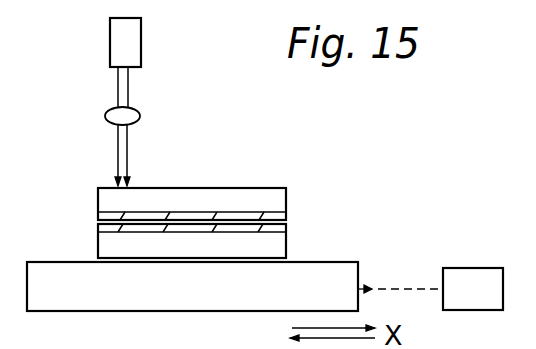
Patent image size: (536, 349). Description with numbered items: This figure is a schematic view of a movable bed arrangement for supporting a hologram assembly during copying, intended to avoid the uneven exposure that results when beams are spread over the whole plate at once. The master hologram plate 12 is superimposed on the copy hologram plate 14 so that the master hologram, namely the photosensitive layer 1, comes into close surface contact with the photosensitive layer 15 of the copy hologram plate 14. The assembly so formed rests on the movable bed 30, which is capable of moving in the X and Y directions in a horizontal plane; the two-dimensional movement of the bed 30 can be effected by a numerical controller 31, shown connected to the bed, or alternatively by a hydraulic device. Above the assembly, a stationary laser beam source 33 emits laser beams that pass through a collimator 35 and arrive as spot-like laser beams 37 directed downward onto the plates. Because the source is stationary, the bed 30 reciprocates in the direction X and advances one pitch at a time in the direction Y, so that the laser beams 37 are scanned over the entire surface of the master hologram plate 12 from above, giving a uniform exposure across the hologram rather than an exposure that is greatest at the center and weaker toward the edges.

The photosensitive layer 1 is at (256, 214).
The master hologram plate 12 is at (296, 199).
The copy hologram plate 14 is at (296, 240).
The photosensitive layer 15 is at (231, 231).
The movable bed 30 is at (85, 311).
The numerical controller 31 is at (484, 269).
The stationary laser beam source 33 is at (141, 46).
The collimator 35 is at (141, 112).
The spot-like laser beams 37 is at (130, 159).